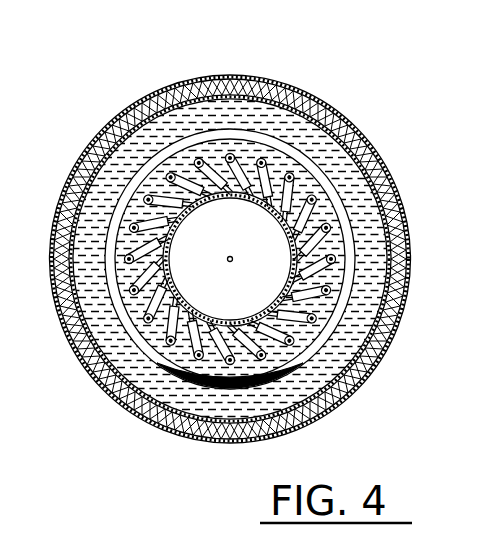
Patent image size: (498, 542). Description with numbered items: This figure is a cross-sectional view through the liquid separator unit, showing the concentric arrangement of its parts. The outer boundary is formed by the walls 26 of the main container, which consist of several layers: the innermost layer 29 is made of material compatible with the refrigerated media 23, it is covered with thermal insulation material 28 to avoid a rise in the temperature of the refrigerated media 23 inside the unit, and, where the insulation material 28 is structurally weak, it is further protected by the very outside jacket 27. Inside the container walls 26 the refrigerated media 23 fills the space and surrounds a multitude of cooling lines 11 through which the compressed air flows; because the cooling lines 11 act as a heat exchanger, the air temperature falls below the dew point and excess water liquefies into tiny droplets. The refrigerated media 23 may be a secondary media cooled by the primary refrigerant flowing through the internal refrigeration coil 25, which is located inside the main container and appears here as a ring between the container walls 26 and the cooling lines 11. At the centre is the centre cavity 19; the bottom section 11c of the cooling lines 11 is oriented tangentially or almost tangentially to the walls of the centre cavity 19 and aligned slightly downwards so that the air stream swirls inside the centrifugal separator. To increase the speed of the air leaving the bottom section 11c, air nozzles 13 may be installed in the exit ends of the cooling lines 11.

The walls 26 is at (160, 33).
The outside jacket 27 is at (93, 137).
The thermal insulation material 28 is at (120, 113).
The innermost layer 29 is at (155, 110).
The refrigerated media 23 is at (200, 118).
The internal refrigeration coil 25 is at (268, 145).
The cooling lines 11 is at (293, 173).
The bottom section of the cooling lines 11c is at (302, 210).
The air nozzles 13 is at (286, 239).
The centre cavity 19 is at (216, 322).